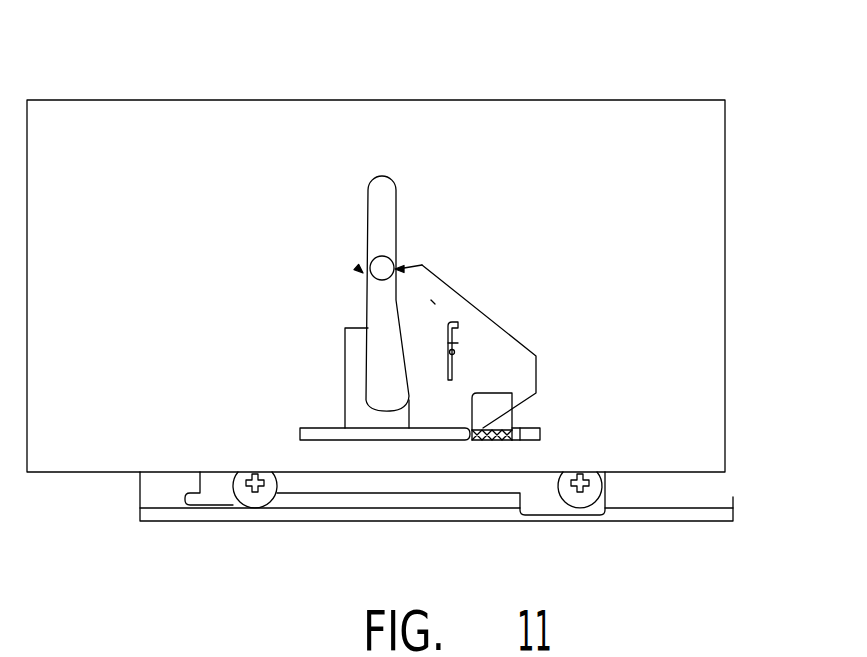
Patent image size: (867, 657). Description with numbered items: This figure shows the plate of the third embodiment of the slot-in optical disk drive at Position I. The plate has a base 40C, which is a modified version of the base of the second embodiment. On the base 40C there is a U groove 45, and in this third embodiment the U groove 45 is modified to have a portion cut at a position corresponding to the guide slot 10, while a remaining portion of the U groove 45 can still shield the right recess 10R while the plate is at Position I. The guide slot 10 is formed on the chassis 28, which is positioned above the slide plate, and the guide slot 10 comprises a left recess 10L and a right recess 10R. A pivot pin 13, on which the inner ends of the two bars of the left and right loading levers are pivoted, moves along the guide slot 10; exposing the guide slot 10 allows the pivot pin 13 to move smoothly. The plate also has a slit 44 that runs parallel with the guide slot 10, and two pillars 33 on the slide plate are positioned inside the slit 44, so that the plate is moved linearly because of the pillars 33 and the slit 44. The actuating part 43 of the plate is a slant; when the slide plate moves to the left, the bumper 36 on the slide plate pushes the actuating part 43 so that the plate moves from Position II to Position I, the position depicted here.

The guide slot 10 is at (380, 190).
The left recess 10L is at (358, 268).
The right recess 10R is at (406, 263).
The pivot pin 13 is at (380, 267).
The chassis 28 is at (687, 183).
The pillars 33 is at (458, 343).
The bumper 36 is at (512, 414).
The base 40C is at (433, 302).
The actuating part 43 is at (517, 408).
The slit 44 is at (458, 326).
The U groove 45 is at (372, 322).